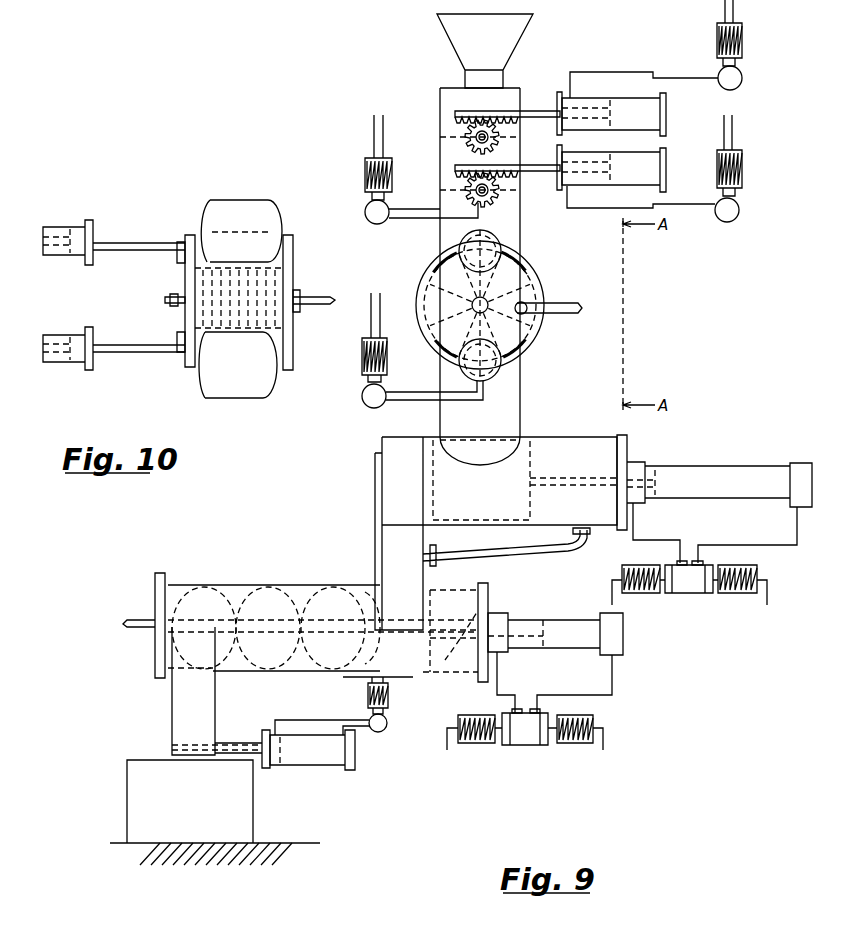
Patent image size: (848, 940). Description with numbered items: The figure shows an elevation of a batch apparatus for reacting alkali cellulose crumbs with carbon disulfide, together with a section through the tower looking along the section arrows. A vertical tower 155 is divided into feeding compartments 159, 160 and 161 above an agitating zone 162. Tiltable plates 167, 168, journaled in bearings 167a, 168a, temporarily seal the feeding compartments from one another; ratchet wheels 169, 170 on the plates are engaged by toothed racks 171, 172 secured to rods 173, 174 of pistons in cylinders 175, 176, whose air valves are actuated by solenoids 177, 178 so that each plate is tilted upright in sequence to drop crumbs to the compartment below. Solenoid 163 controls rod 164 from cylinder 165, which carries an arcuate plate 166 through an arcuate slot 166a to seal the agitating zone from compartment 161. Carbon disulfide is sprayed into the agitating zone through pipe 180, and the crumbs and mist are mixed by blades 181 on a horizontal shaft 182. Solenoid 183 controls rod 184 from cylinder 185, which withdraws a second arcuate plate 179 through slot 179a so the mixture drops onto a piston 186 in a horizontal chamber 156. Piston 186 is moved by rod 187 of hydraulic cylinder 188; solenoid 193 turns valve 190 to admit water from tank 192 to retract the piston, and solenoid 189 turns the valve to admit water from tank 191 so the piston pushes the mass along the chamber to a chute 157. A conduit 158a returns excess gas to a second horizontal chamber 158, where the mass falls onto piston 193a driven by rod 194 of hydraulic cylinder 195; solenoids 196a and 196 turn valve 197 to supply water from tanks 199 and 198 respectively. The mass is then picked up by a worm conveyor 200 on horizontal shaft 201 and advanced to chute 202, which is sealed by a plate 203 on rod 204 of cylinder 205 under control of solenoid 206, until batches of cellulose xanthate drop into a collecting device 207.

In FIG. 9, the vertical tower 155 is at (518, 237).
In FIG. 10, the vertical tower 155 is at (208, 218).
In FIG. 9, the horizontal chamber 156 is at (557, 437).
In FIG. 9, the chute 157 is at (392, 514).
In FIG. 9, the horizontal chamber 158 is at (312, 583).
In FIG. 9, the conduit 158a is at (508, 552).
In FIG. 9, the feeding compartment 159 is at (442, 123).
In FIG. 9, the feeding compartment 160 is at (442, 176).
In FIG. 9, the feeding compartment 161 is at (442, 234).
In FIG. 10, the feeding compartment 161 is at (258, 205).
In FIG. 9, the agitating zone 162 is at (531, 294).
In FIG. 9, the solenoid 163 is at (365, 171).
In FIG. 10, the rod 164 is at (125, 243).
In FIG. 9, the cylinder 165 is at (440, 249).
In FIG. 10, the cylinder 165 is at (55, 232).
In FIG. 9, the arcuate plate 166 is at (527, 262).
In FIG. 10, the arcuate plate 166 is at (180, 260).
In FIG. 9, the arcuate slot 166a is at (530, 271).
In FIG. 9, the tiltable plate 167 is at (467, 137).
In FIG. 9, the bearing 167a is at (500, 125).
In FIG. 9, the tiltable plate 168 is at (445, 200).
In FIG. 9, the bearing 168a is at (486, 199).
In FIG. 9, the ratchet wheel 169 is at (518, 126).
In FIG. 9, the ratchet wheel 170 is at (520, 178).
In FIG. 9, the toothed rack 171 is at (455, 112).
In FIG. 9, the toothed rack 172 is at (476, 167).
In FIG. 9, the rod 173 is at (532, 105).
In FIG. 9, the rod 174 is at (520, 162).
In FIG. 9, the cylinder 175 is at (666, 112).
In FIG. 9, the cylinder 176 is at (666, 160).
In FIG. 9, the solenoid 177 is at (742, 44).
In FIG. 9, the solenoid 178 is at (742, 170).
In FIG. 9, the arcuate plate 179 is at (529, 342).
In FIG. 10, the arcuate plate 179 is at (178, 348).
In FIG. 9, the arcuate slot 179a is at (527, 348).
In FIG. 9, the pipe 180 is at (568, 313).
In FIG. 10, the pipe 180 is at (165, 300).
In FIG. 9, the blades 181 is at (418, 305).
In FIG. 9, the horizontal shaft 182 is at (472, 304).
In FIG. 10, the horizontal shaft 182 is at (312, 297).
In FIG. 9, the solenoid 183 is at (362, 350).
In FIG. 10, the rod 184 is at (105, 345).
In FIG. 9, the cylinder 185 is at (503, 368).
In FIG. 10, the cylinder 185 is at (55, 335).
In FIG. 9, the piston 186 is at (432, 455).
In FIG. 9, the rod 187 is at (560, 478).
In FIG. 9, the hydraulic cylinder 188 is at (718, 474).
In FIG. 9, the solenoid 189 is at (752, 565).
In FIG. 9, the valve 190 is at (688, 586).
In FIG. 9, the tank 191 is at (702, 567).
In FIG. 9, the tank 192 is at (678, 562).
In FIG. 9, the solenoid 193 is at (622, 580).
In FIG. 9, the piston 193a is at (440, 598).
In FIG. 9, the rod 194 is at (486, 611).
In FIG. 9, the hydraulic cylinder 195 is at (535, 618).
In FIG. 9, the solenoid 196 is at (598, 727).
In FIG. 9, the solenoid 196a is at (466, 714).
In FIG. 9, the valve 197 is at (525, 745).
In FIG. 9, the tank 198 is at (553, 716).
In FIG. 9, the tank 199 is at (527, 710).
In FIG. 9, the worm conveyor 200 is at (207, 590).
In FIG. 9, the horizontal shaft 201 is at (130, 620).
In FIG. 9, the chute 202 is at (182, 698).
In FIG. 9, the plate 203 is at (175, 743).
In FIG. 9, the rod 204 is at (225, 745).
In FIG. 9, the cylinder 205 is at (312, 761).
In FIG. 9, the solenoid 206 is at (388, 697).
In FIG. 9, the collecting device 207 is at (127, 790).